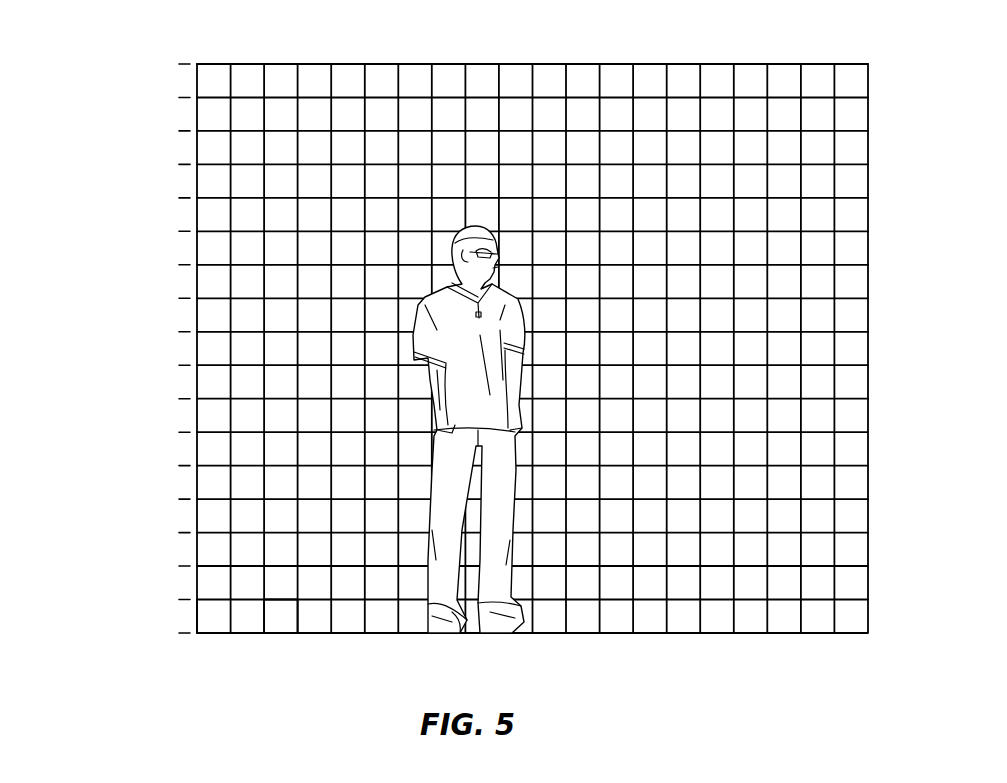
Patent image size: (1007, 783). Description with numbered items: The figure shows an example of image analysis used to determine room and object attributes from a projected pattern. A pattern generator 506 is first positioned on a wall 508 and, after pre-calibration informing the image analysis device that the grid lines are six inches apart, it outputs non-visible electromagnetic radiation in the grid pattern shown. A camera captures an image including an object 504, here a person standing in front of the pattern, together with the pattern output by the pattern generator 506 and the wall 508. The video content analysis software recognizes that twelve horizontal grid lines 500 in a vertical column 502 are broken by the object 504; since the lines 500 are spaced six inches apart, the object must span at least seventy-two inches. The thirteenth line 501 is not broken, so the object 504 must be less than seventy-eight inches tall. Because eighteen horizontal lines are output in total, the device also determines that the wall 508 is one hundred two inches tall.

The horizontal grid lines 500 is at (128, 233).
The thirteenth line 501 is at (868, 205).
The vertical column 502 is at (517, 63).
The object 504 is at (498, 577).
The pattern generator 506 is at (279, 598).
The wall 508 is at (213, 620).